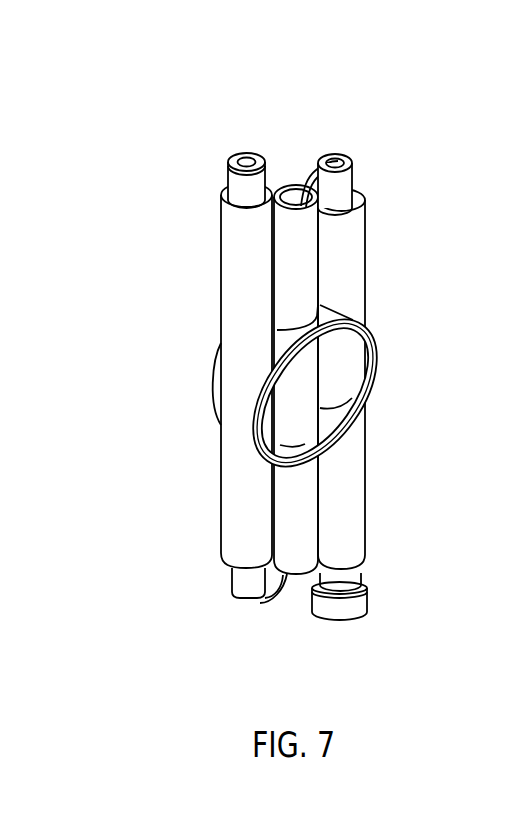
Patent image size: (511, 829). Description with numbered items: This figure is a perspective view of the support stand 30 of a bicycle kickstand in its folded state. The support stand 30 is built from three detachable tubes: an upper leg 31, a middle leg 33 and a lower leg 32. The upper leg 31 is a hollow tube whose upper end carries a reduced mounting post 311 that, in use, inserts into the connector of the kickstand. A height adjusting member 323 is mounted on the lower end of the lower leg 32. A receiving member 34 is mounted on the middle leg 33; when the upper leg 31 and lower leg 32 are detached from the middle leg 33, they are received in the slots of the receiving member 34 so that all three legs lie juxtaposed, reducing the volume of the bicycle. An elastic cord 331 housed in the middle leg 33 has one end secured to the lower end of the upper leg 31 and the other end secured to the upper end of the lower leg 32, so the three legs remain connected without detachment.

The support stand 30 is at (283, 347).
The upper leg 31 is at (197, 362).
The reduced mounting post 311 is at (237, 183).
The lower leg 32 is at (396, 387).
The height adjusting member 323 is at (352, 603).
The middle leg 33 is at (337, 324).
The elastic cord 331 is at (300, 153).
The receiving member 34 is at (338, 425).